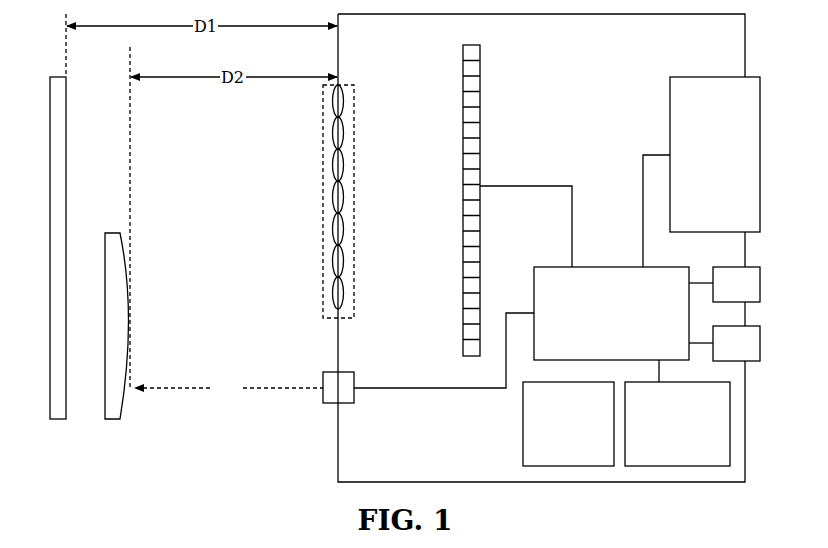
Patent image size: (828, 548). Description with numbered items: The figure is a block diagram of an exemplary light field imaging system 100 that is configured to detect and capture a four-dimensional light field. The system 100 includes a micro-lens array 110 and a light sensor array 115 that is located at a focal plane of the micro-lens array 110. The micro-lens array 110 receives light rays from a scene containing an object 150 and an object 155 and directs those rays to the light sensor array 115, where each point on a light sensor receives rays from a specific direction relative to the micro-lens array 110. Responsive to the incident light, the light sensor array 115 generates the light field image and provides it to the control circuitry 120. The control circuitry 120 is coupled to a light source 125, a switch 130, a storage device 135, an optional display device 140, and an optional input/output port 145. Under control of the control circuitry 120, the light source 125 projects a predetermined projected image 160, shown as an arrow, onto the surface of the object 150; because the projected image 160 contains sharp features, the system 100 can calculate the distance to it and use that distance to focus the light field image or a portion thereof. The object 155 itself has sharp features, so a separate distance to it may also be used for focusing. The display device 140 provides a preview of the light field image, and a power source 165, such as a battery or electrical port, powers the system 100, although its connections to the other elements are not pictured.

The light field imaging system 100 is at (735, 43).
The micro-lens array 110 is at (346, 85).
The light sensor array 115 is at (487, 63).
The control circuitry 120 is at (611, 313).
The light source 125 is at (355, 372).
The switch 130 is at (736, 284).
The storage device 135 is at (677, 424).
The display device 140 is at (715, 154).
The input/output port 145 is at (736, 343).
The object 150 is at (130, 260).
The object 155 is at (66, 414).
The projected image 160 is at (229, 388).
The power source 165 is at (568, 424).